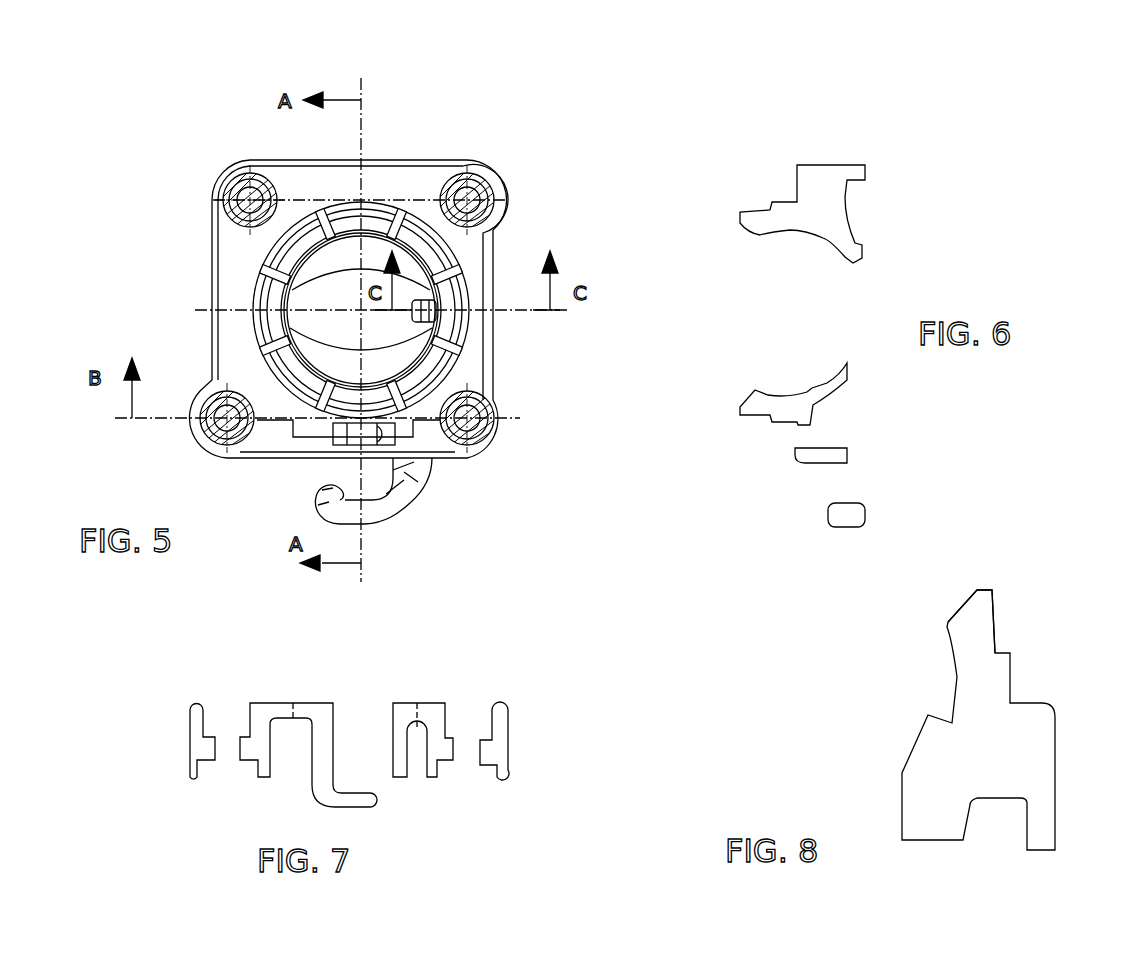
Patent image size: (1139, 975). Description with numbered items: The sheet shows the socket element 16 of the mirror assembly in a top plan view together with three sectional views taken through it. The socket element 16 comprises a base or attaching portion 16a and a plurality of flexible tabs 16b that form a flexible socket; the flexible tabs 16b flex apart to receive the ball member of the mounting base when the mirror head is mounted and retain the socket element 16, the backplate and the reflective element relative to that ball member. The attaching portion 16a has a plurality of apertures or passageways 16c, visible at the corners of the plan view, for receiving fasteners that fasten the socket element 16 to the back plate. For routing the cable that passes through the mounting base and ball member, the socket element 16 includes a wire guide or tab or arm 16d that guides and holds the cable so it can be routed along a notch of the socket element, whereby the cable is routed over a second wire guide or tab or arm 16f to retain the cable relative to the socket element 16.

In FIG. 5, the socket element 16 is at (434, 159).
In FIG. 5, the attaching portion 16a is at (494, 355).
In FIG. 6, the attaching portion 16a is at (835, 166).
In FIG. 7, the attaching portion 16a is at (510, 741).
In FIG. 8, the attaching portion 16a is at (1047, 750).
In FIG. 5, the flexible tabs 16b is at (272, 311).
In FIG. 6, the flexible tabs 16b is at (742, 410).
In FIG. 8, the flexible tabs 16b is at (975, 593).
In FIG. 5, the apertures 16c is at (480, 181).
In FIG. 5, the wire guide 16d is at (351, 438).
In FIG. 7, the wire guide 16d is at (367, 806).
In FIG. 5, the second wire guide 16f is at (372, 522).
In FIG. 6, the second wire guide 16f is at (848, 520).